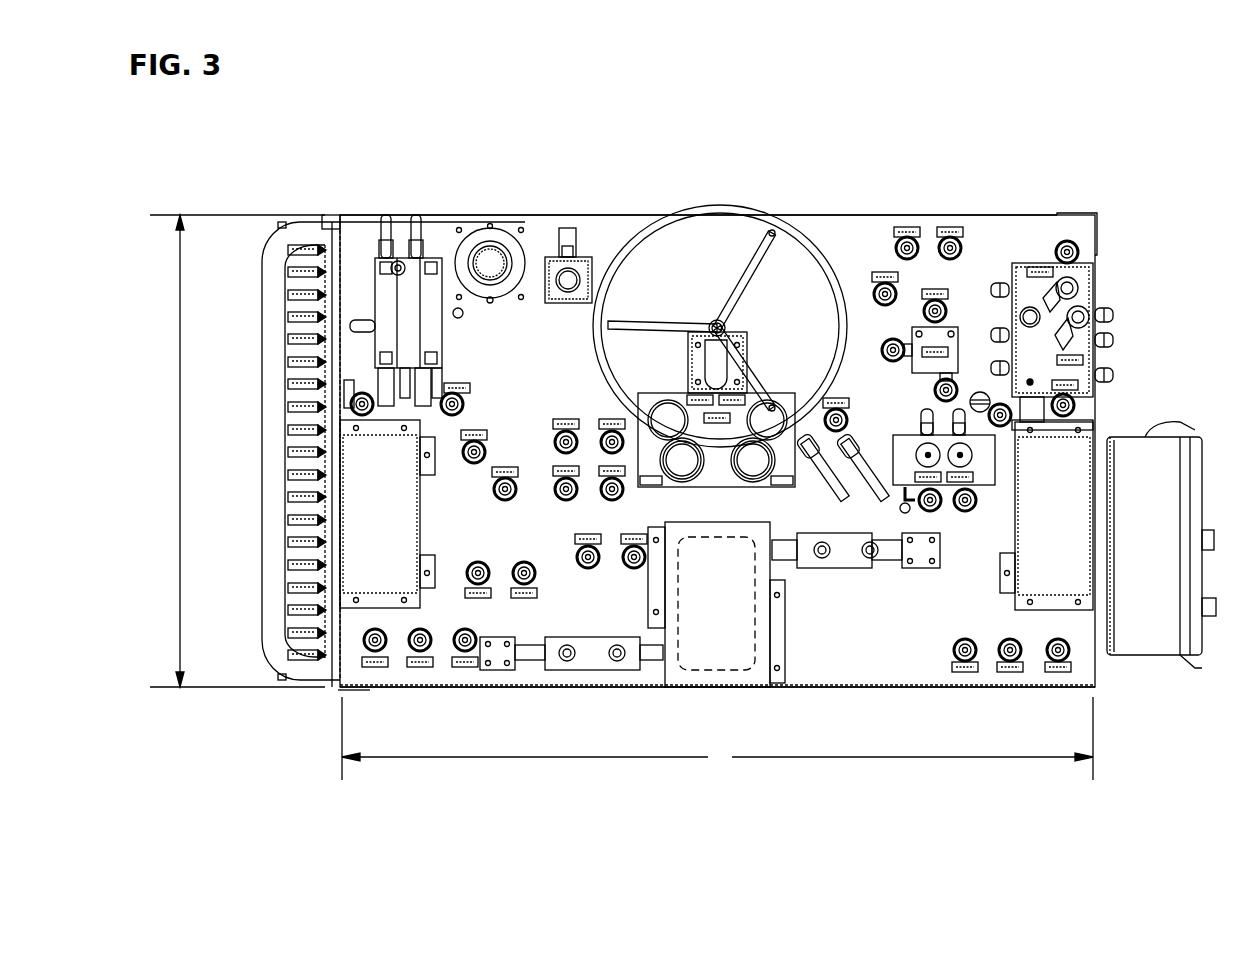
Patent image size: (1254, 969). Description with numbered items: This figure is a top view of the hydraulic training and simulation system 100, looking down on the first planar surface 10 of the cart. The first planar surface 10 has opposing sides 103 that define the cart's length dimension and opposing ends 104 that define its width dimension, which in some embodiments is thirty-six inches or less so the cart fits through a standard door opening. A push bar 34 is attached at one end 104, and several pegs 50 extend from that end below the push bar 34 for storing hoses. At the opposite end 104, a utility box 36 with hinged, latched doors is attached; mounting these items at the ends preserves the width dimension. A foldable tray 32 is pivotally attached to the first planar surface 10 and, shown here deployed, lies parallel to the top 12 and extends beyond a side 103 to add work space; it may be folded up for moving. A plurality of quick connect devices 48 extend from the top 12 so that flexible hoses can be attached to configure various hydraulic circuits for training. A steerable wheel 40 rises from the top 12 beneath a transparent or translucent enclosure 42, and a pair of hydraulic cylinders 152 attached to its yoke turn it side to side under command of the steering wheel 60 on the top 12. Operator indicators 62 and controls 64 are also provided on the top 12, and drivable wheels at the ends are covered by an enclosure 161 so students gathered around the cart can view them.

The hydraulic training and simulation system 100 is at (957, 85).
The first planar surface 10 is at (1018, 215).
The top of the first planar surface 12 is at (872, 208).
The foldable tray 32 is at (364, 200).
The push bar 34 is at (270, 325).
The utility box 36 is at (1122, 487).
The steerable wheel 40 is at (705, 630).
The enclosure 42 is at (738, 672).
The quick connect devices 48 is at (488, 502).
The pegs 50 is at (287, 462).
The steering wheel 60 is at (707, 218).
The operator indicators 62 is at (685, 405).
The controls 64 is at (368, 250).
The sides 103 is at (618, 215).
The ends 104 is at (320, 245).
The hydraulic cylinders 152 is at (800, 570).
The enclosure 161 is at (358, 518).